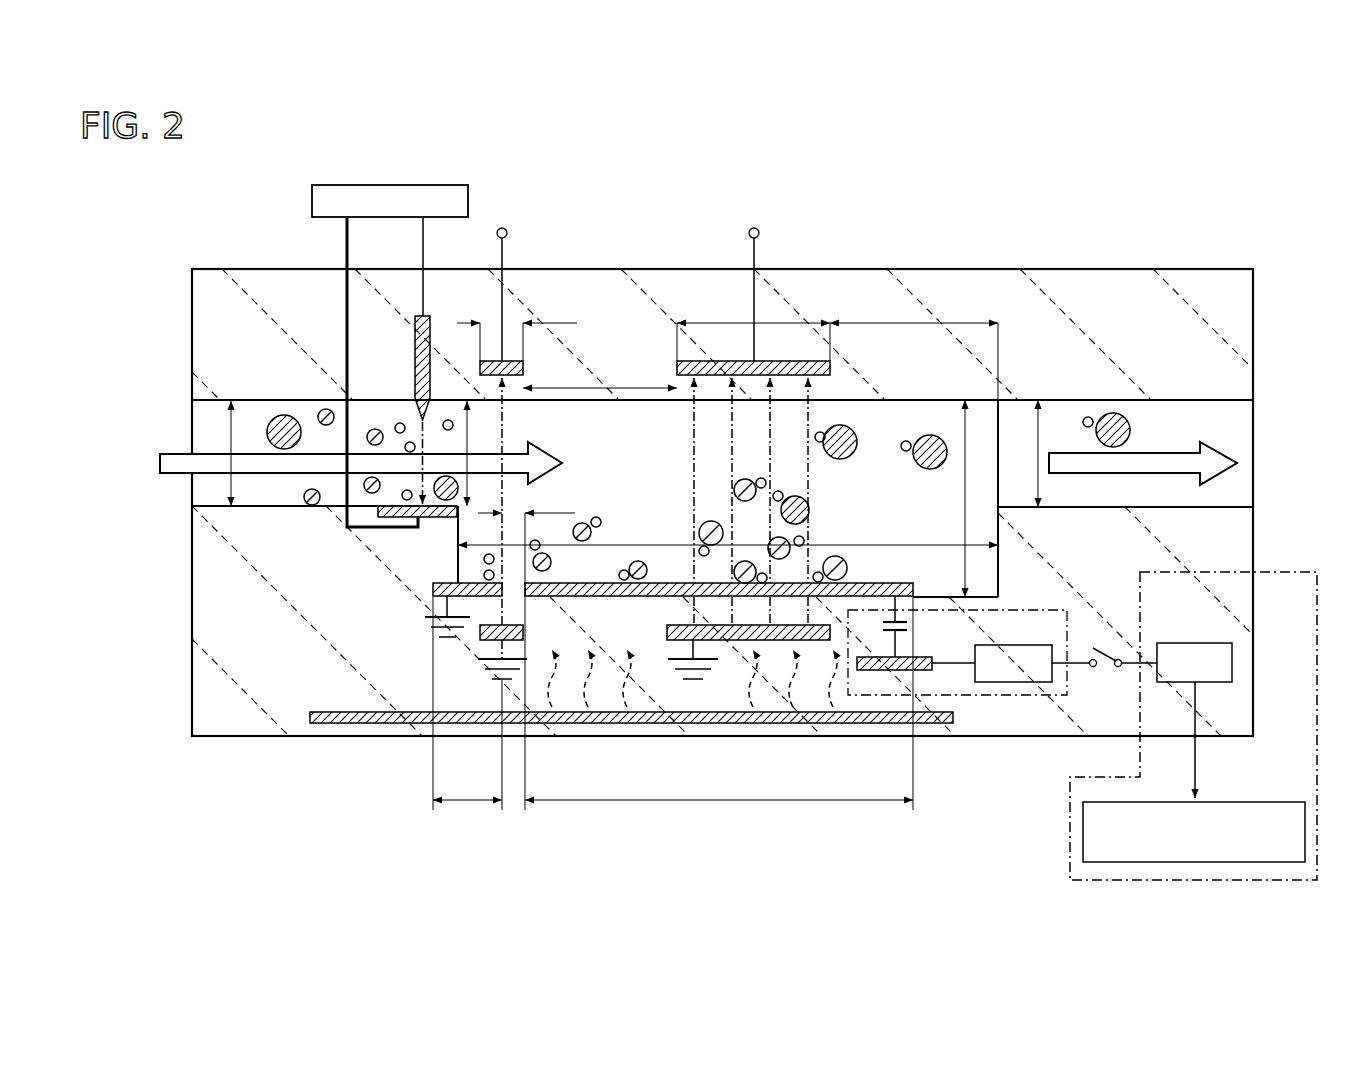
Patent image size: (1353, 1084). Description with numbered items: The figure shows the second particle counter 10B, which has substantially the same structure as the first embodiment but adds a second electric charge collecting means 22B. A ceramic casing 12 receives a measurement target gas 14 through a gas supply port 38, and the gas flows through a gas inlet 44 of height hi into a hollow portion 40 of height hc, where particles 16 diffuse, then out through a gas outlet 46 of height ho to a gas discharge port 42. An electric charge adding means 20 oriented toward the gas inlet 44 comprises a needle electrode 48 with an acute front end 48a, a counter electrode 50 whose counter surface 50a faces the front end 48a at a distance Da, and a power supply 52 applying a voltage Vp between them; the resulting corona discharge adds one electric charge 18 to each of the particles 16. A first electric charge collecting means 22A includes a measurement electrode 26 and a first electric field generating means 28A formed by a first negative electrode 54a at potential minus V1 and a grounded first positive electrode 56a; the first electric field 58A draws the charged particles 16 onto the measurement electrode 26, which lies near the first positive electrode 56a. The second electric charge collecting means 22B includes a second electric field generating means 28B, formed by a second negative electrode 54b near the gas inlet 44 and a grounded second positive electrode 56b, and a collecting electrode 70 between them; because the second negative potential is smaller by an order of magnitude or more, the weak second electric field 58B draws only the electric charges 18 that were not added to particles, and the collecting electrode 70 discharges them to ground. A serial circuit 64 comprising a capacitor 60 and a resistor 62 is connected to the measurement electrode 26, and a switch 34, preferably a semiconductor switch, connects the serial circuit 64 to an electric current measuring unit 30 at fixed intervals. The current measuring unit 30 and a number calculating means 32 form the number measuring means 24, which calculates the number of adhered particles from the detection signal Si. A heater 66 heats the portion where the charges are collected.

The second particle counter 10B is at (283, 172).
The casing 12 is at (238, 268).
The measurement target gas 14 is at (176, 476).
The particles 16 is at (288, 414).
The electric charges 18 is at (451, 418).
The electric charge adding means 20 is at (427, 394).
The first electric charge collecting means 22A is at (661, 607).
The second electric charge collecting means 22B is at (410, 620).
The number measuring means 24 is at (1186, 726).
The measurement electrode 26 is at (887, 583).
The first electric field generating means 28A is at (837, 318).
The second electric field generating means 28B is at (567, 296).
The electric current measuring unit 30 is at (1175, 643).
The number calculating means 32 is at (1240, 802).
The switch 34 is at (1105, 665).
The gas supply port 38 is at (190, 442).
The hollow portion 40 is at (928, 420).
The gas discharge port 42 is at (1255, 460).
The gas inlet 44 is at (257, 415).
The gas outlet 46 is at (1170, 415).
The needle electrode 48 is at (414, 345).
The front end 48a is at (417, 420).
The counter electrode 50 is at (452, 518).
The counter surface 50a is at (378, 512).
The power supply 52 is at (400, 185).
The first negative electrode 54a is at (828, 380).
The second negative electrode 54b is at (523, 370).
The first positive electrode 56a is at (737, 642).
The second positive electrode 56b is at (525, 632).
The first electric field 58A is at (822, 491).
The second electric field 58B is at (504, 434).
The capacitor 60 is at (908, 627).
The resistor 62 is at (996, 675).
The serial circuit 64 is at (974, 645).
The heater 66 is at (768, 724).
The collecting electrode 70 is at (433, 588).